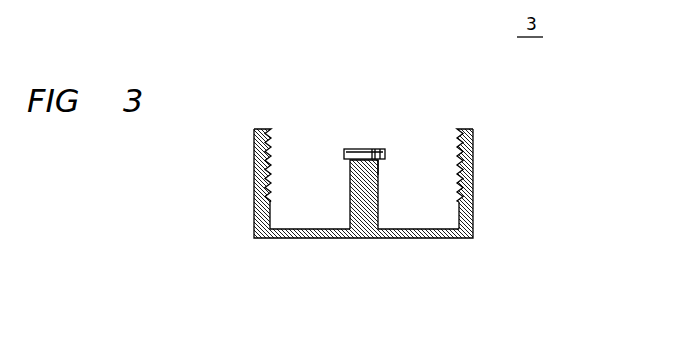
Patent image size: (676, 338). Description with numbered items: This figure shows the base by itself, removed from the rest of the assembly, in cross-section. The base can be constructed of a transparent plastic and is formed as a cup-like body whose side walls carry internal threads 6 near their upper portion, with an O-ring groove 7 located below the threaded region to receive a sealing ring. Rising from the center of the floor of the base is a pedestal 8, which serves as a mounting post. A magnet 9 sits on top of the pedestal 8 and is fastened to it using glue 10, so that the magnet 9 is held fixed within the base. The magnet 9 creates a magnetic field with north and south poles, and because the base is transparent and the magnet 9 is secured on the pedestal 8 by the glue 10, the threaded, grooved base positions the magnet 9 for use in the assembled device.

The internal threads 6 is at (457, 143).
The O-ring groove 7 is at (464, 197).
The pedestal 8 is at (350, 187).
The magnet 9 is at (363, 150).
The glue 10 is at (380, 161).